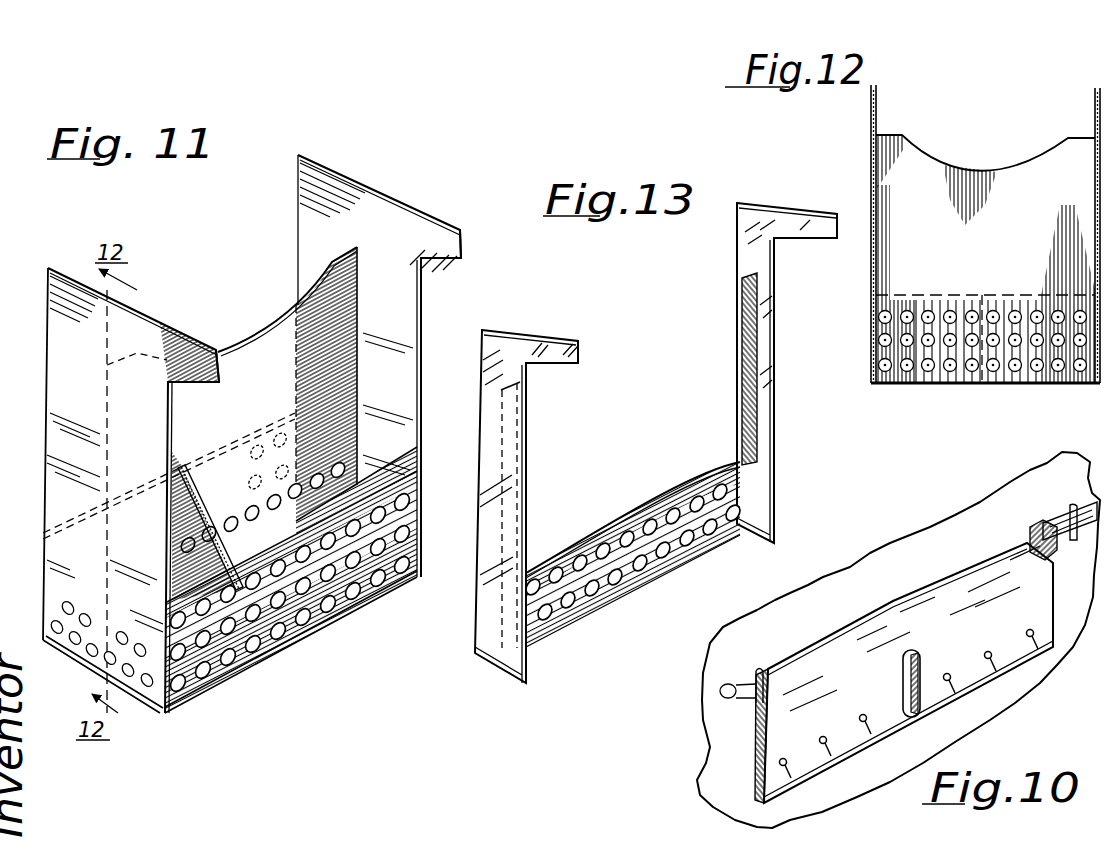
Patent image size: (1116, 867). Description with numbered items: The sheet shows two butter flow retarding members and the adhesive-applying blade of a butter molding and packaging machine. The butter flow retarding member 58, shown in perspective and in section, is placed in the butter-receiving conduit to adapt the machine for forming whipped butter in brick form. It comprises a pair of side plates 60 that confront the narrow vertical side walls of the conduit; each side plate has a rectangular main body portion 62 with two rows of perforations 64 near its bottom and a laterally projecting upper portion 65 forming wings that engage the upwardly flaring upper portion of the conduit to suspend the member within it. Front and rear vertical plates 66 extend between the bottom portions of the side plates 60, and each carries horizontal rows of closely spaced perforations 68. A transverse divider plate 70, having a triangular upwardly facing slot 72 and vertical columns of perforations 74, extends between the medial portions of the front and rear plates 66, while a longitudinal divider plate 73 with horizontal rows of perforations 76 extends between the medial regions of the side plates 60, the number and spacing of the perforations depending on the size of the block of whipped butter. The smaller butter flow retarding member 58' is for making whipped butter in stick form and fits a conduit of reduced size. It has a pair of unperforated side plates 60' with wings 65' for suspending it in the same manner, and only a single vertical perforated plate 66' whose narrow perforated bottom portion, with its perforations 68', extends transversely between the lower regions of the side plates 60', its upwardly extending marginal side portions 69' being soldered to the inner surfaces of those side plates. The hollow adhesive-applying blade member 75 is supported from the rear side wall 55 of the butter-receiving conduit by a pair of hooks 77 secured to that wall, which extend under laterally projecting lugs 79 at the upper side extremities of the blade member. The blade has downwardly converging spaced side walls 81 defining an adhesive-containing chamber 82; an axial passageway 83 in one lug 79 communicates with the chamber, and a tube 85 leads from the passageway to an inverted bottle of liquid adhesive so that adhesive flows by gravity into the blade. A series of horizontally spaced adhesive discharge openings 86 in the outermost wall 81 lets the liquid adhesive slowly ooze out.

In FIG. 10, the rear side wall 55 is at (932, 535).
In FIG. 11, the butter flow retarding member 58 is at (268, 568).
In FIG. 13, the butter flow retarding member 58' is at (709, 513).
In FIG. 11, the side plates 60 is at (238, 434).
In FIG. 13, the unperforated side plates 60' is at (633, 443).
In FIG. 11, the rectangular main body portion 62 is at (48, 515).
In FIG. 12, the rectangular main body portion 62 is at (871, 123).
In FIG. 11, the perforations 64 is at (75, 645).
In FIG. 11, the laterally projecting upper portion 65 is at (328, 290).
In FIG. 13, the wings 65' is at (684, 270).
In FIG. 11, the front and rear vertical plates 66 is at (291, 557).
In FIG. 13, the vertical perforated plate 66' is at (633, 548).
In FIG. 11, the perforations 68 is at (384, 577).
In FIG. 13, the perforations 68' is at (633, 552).
In FIG. 13, the marginal side portions 69' is at (629, 460).
In FIG. 11, the transverse divider plate 70 is at (199, 494).
In FIG. 12, the transverse divider plate 70 is at (990, 304).
In FIG. 11, the triangular upwardly facing slot 72 is at (184, 467).
In FIG. 11, the longitudinal divider plate 73 is at (271, 341).
In FIG. 12, the longitudinal divider plate 73 is at (1006, 221).
In FIG. 11, the perforations 74 is at (270, 650).
In FIG. 10, the adhesive-applying blade member 75 is at (890, 598).
In FIG. 12, the perforations 76 is at (992, 373).
In FIG. 10, the hooks 77 is at (753, 707).
In FIG. 10, the laterally projecting lugs 79 is at (722, 686).
In FIG. 10, the side walls 81 is at (905, 690).
In FIG. 10, the adhesive-containing chamber 82 is at (901, 660).
In FIG. 10, the axial passageway 83 is at (1032, 530).
In FIG. 10, the tube 85 is at (1066, 465).
In FIG. 10, the adhesive discharge openings 86 is at (828, 765).